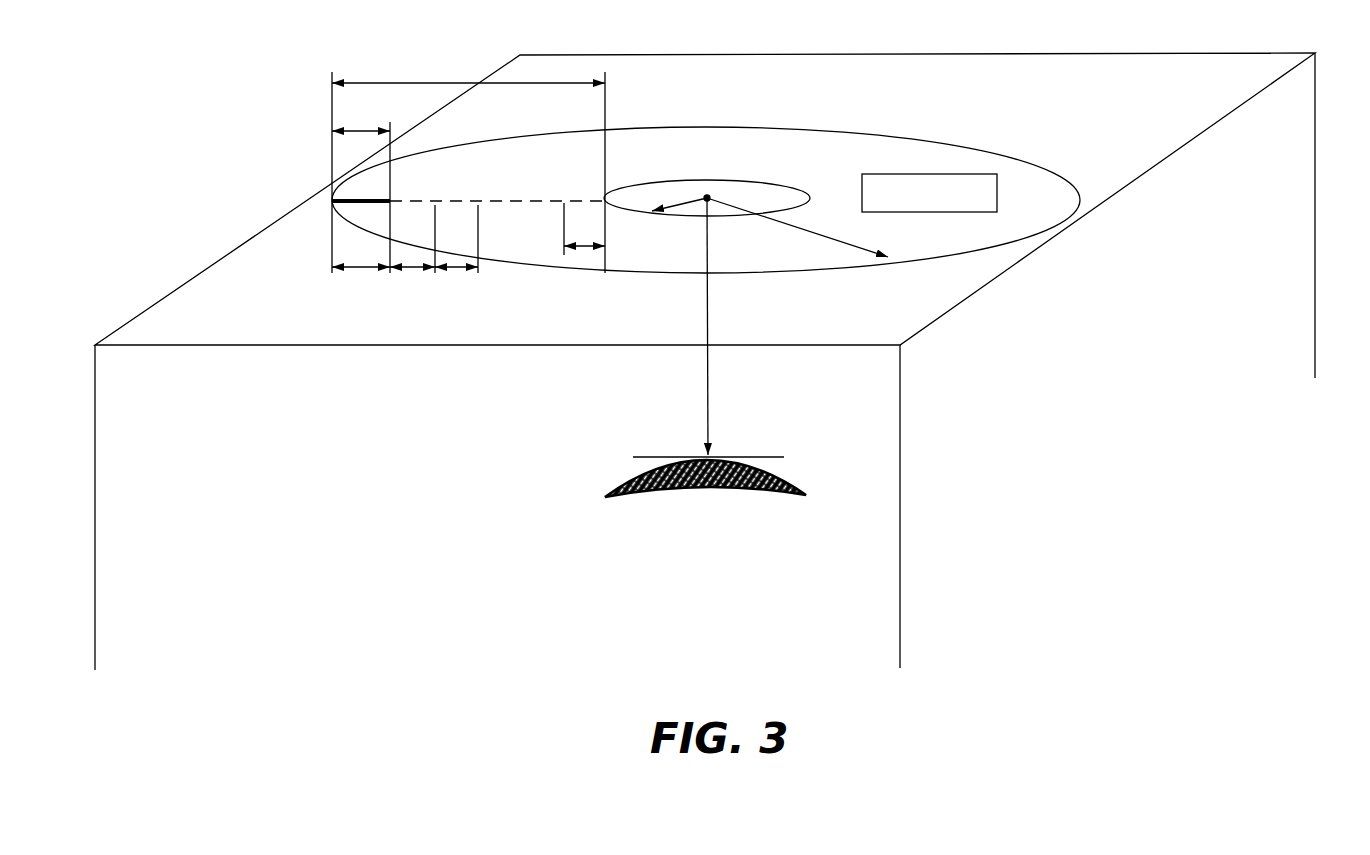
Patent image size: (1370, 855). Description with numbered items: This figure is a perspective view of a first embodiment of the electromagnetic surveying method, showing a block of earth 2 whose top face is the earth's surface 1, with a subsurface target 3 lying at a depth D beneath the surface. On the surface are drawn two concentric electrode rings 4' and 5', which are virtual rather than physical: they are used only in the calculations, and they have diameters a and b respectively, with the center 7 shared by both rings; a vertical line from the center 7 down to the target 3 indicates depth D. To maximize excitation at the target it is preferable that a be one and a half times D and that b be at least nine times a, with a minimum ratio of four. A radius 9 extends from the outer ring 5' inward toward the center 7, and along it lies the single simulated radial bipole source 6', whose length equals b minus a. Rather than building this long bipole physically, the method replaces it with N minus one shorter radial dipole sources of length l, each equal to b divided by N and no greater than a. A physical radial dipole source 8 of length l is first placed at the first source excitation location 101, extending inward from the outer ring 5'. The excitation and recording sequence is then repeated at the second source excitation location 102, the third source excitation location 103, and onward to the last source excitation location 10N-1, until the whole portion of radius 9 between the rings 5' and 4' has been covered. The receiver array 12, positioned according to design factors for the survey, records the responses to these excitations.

The earth's surface 1 is at (233, 311).
The earth 2 is at (342, 515).
The subsurface target 3 is at (615, 487).
The inner virtual concentric electrode ring 4' is at (707, 155).
The outer virtual concentric electrode ring 5' is at (706, 194).
The simulated radial bipole source 6' is at (468, 160).
The center 7 is at (707, 197).
The radial dipole source 8 is at (347, 198).
The radius 9 is at (545, 203).
The first source excitation location 101 is at (362, 271).
The second source excitation location 102 is at (417, 271).
The third source excitation location 103 is at (455, 271).
The last source excitation location 10N-1 is at (574, 254).
The receiver array 12 is at (913, 206).
The radial dipole source length l is at (358, 130).
The inner ring diameter a is at (680, 213).
The outer ring diameter b is at (800, 232).
The target depth D is at (708, 378).